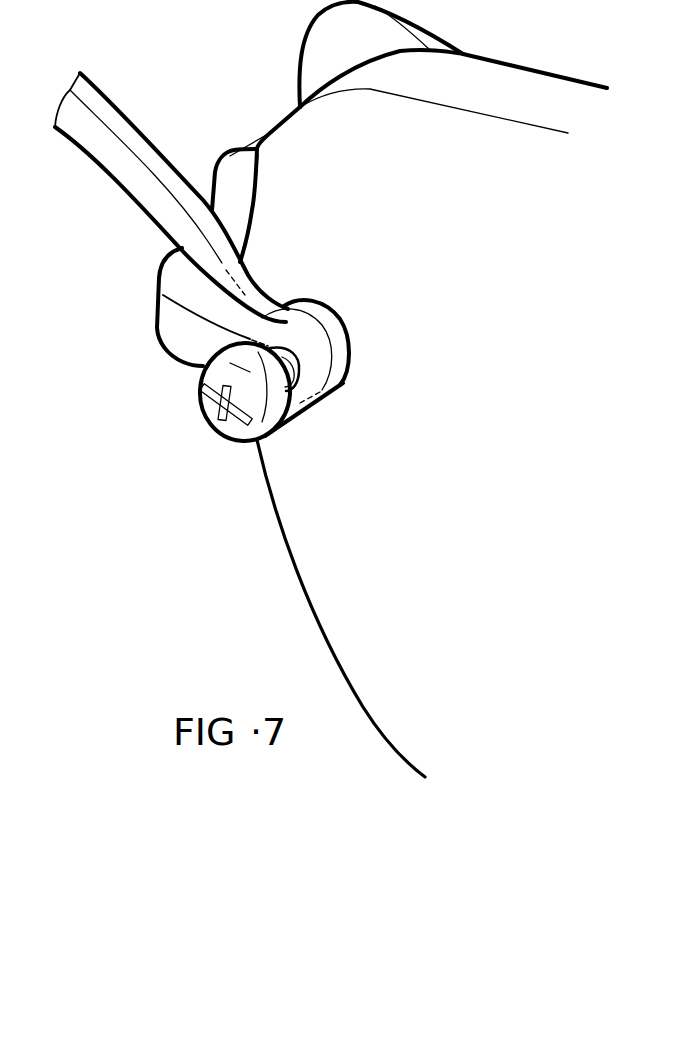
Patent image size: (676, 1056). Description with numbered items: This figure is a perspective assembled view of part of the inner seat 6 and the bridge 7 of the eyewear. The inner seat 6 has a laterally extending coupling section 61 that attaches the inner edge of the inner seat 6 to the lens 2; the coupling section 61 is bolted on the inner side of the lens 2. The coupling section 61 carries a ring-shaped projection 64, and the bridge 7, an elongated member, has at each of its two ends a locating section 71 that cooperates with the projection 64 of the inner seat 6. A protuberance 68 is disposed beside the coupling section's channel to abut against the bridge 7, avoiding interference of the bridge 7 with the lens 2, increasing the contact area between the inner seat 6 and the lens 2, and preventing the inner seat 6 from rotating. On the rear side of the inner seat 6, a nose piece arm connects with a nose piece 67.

The lens 2 is at (290, 508).
The inner seat 6 is at (148, 297).
The bridge 7 is at (103, 107).
The coupling section 61 is at (283, 423).
The ring-shaped projection 64 is at (318, 312).
The nose piece 67 is at (312, 47).
The protuberance 68 is at (230, 192).
The locating section 71 is at (300, 386).